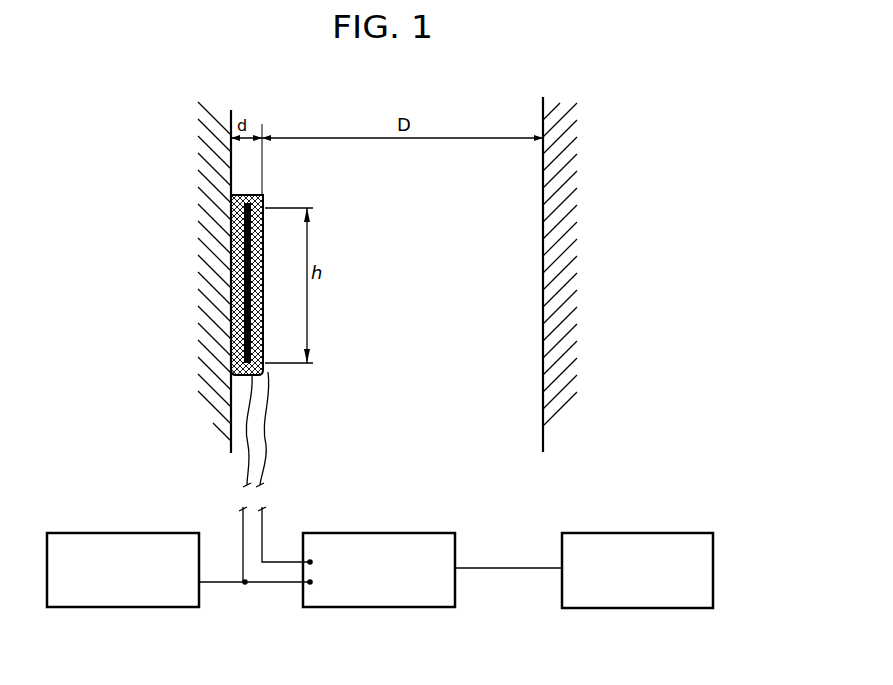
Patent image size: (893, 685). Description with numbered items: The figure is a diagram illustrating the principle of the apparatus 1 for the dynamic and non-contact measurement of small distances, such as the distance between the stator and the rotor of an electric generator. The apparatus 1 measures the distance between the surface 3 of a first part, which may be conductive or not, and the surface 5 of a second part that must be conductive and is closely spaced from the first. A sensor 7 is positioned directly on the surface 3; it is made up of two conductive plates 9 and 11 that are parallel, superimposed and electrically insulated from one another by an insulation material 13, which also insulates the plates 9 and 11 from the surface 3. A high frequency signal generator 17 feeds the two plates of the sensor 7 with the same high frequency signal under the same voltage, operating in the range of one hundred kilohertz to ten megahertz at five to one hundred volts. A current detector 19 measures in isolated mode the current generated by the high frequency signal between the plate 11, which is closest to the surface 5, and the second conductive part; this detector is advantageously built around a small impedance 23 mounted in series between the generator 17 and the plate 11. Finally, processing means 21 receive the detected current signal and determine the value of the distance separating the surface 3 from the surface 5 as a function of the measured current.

The apparatus 1 is at (371, 526).
The surface of the first part 3 is at (231, 112).
The surface of the second conductive part 5 is at (543, 112).
The sensor 7 is at (241, 267).
The plate 9 is at (231, 305).
The plate 11 is at (264, 304).
The insulation material 13 is at (240, 195).
The high frequency signal generator 17 is at (74, 488).
The current detector 19 is at (320, 608).
The processing means 21 is at (606, 609).
The low impedance 23 is at (310, 561).